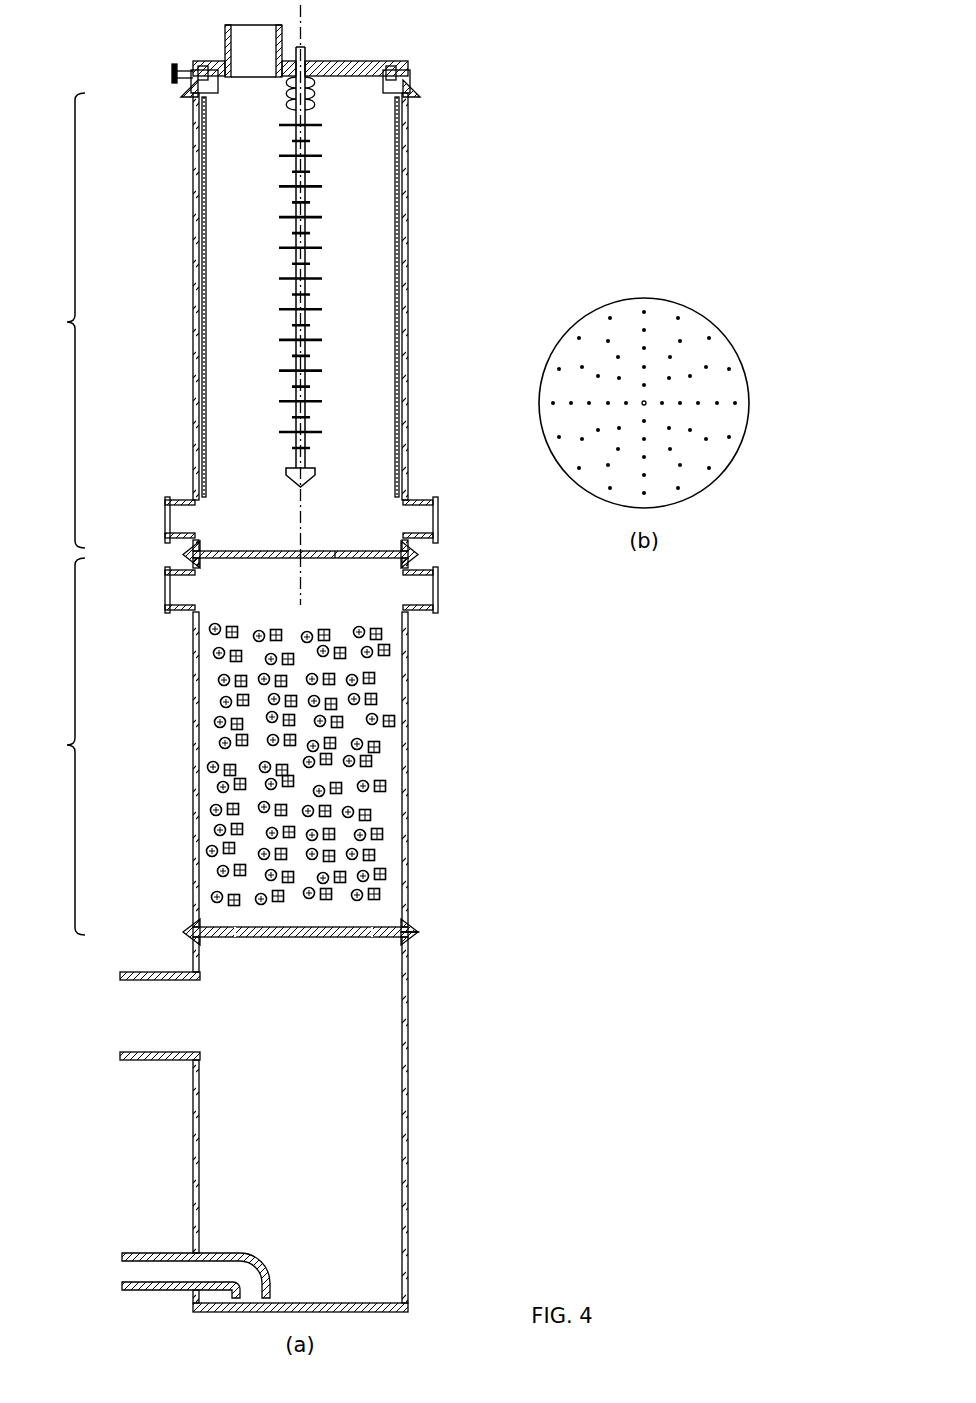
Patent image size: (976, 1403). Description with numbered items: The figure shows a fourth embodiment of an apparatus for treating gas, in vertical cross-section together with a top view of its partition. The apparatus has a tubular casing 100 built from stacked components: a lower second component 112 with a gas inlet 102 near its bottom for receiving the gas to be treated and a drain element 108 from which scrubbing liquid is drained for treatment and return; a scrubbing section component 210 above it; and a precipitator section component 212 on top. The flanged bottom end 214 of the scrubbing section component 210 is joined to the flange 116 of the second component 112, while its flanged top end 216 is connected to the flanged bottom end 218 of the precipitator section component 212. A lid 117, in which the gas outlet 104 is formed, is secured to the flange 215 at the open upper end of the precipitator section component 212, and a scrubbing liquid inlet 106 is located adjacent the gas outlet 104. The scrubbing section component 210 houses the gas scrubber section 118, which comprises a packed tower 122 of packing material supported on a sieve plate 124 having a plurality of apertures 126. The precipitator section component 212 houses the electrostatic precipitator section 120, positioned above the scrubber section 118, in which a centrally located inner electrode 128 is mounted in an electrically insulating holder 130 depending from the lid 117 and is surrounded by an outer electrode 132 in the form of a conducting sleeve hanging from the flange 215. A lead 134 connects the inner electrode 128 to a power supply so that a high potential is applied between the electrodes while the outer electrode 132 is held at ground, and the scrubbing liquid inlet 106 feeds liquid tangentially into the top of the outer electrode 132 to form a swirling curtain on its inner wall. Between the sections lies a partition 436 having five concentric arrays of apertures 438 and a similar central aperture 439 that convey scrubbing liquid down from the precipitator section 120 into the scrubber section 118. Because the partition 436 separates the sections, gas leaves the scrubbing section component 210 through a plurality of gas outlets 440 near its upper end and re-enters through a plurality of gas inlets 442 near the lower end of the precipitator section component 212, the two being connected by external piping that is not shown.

The casing 100 is at (424, 821).
The gas inlet 102 is at (150, 1060).
The gas outlet 104 is at (225, 40).
The scrubbing liquid inlet 106 is at (172, 75).
The drain element 108 is at (152, 1253).
The second component 112 is at (408, 1070).
The flange 116 is at (416, 940).
The lid 117 is at (376, 61).
The gas scrubber section 118 is at (52, 746).
The electrostatic precipitator section 120 is at (52, 320).
The packed tower 122 is at (392, 750).
The sieve plate 124 is at (282, 937).
The apertures 126 is at (235, 937).
The inner electrode 128 is at (305, 224).
The electrically insulating holder 130 is at (320, 98).
The outer electrode 132 is at (206, 260).
The lead 134 is at (300, 22).
The scrubbing section component 210 is at (193, 710).
The precipitator section component 212 is at (193, 207).
The flanged bottom end 214 is at (415, 930).
The flange 215 is at (415, 95).
The flanged top end 216 is at (420, 558).
The flanged bottom end 218 is at (183, 555).
The partition 436 is at (260, 558).
The apertures 438 is at (335, 551).
The central aperture 439 is at (300, 551).
The gas outlets 440 is at (165, 590).
The gas inlets 442 is at (165, 522).